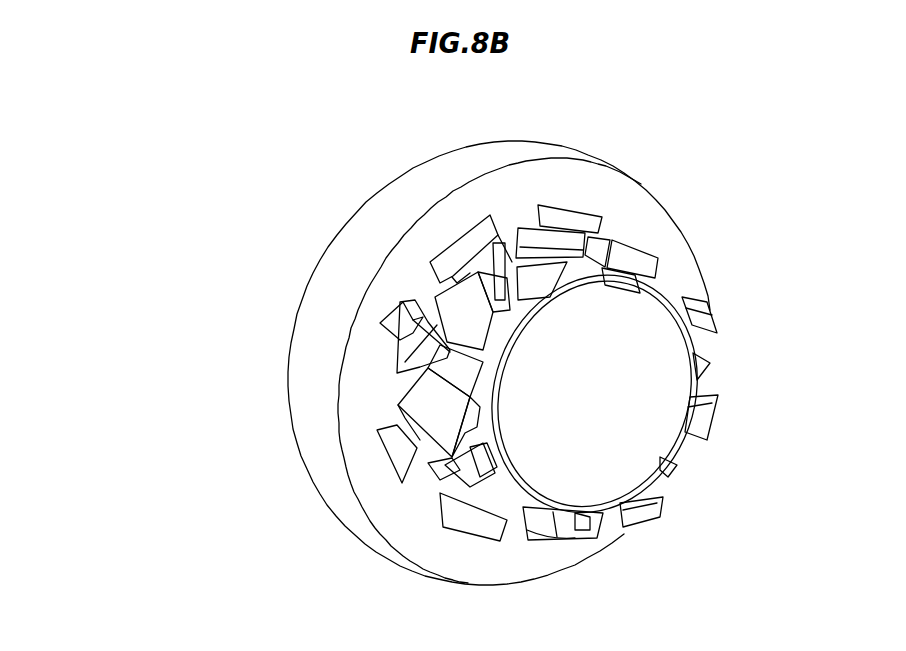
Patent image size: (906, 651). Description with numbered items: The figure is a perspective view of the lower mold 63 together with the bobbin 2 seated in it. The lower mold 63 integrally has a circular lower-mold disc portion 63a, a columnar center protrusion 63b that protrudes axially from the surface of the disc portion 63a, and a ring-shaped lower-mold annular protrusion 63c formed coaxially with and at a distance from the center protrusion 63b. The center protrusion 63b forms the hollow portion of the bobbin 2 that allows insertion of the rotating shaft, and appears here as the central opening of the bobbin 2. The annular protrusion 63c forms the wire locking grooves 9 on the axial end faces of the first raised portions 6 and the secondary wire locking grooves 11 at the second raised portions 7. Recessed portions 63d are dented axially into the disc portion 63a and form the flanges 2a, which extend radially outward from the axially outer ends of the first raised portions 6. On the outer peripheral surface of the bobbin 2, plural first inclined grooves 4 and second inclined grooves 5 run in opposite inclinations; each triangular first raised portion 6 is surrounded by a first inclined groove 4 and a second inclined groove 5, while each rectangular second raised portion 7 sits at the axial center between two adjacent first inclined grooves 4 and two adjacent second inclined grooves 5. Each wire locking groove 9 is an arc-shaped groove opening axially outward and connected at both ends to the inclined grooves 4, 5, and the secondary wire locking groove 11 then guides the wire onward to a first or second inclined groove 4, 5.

The lower mold 63 is at (442, 347).
The lower-mold disc portion 63a is at (528, 152).
The center protrusion 63b is at (650, 425).
The lower-mold annular protrusion 63c is at (507, 252).
The recessed portions 63d is at (458, 240).
The bobbin 2 is at (420, 372).
The flanges 2a is at (580, 217).
The second raised portion 7 is at (447, 302).
The first raised portion 6 is at (470, 358).
The secondary wire locking groove 11 is at (398, 394).
The wire locking groove 9 is at (400, 414).
The first inclined grooves 4 is at (413, 453).
The second inclined grooves 5 is at (358, 527).